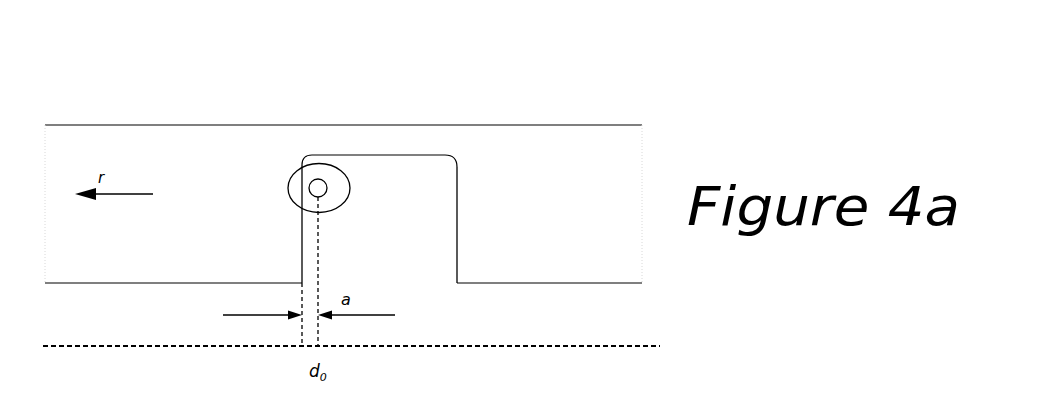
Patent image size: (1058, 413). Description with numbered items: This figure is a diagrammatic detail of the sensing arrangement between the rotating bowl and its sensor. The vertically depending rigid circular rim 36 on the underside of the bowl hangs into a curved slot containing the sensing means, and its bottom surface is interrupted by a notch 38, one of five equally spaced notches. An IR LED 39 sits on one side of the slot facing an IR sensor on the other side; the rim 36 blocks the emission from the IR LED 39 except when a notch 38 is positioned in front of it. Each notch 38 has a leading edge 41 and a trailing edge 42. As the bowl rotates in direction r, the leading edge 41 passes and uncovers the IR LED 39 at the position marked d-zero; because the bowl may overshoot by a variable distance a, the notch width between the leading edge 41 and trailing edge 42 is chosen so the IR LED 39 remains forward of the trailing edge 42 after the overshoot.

The rim 36 is at (613, 183).
The notch 38 is at (430, 152).
The IR LED 39 is at (295, 183).
The leading edge 41 is at (295, 229).
The trailing edge 42 is at (457, 231).